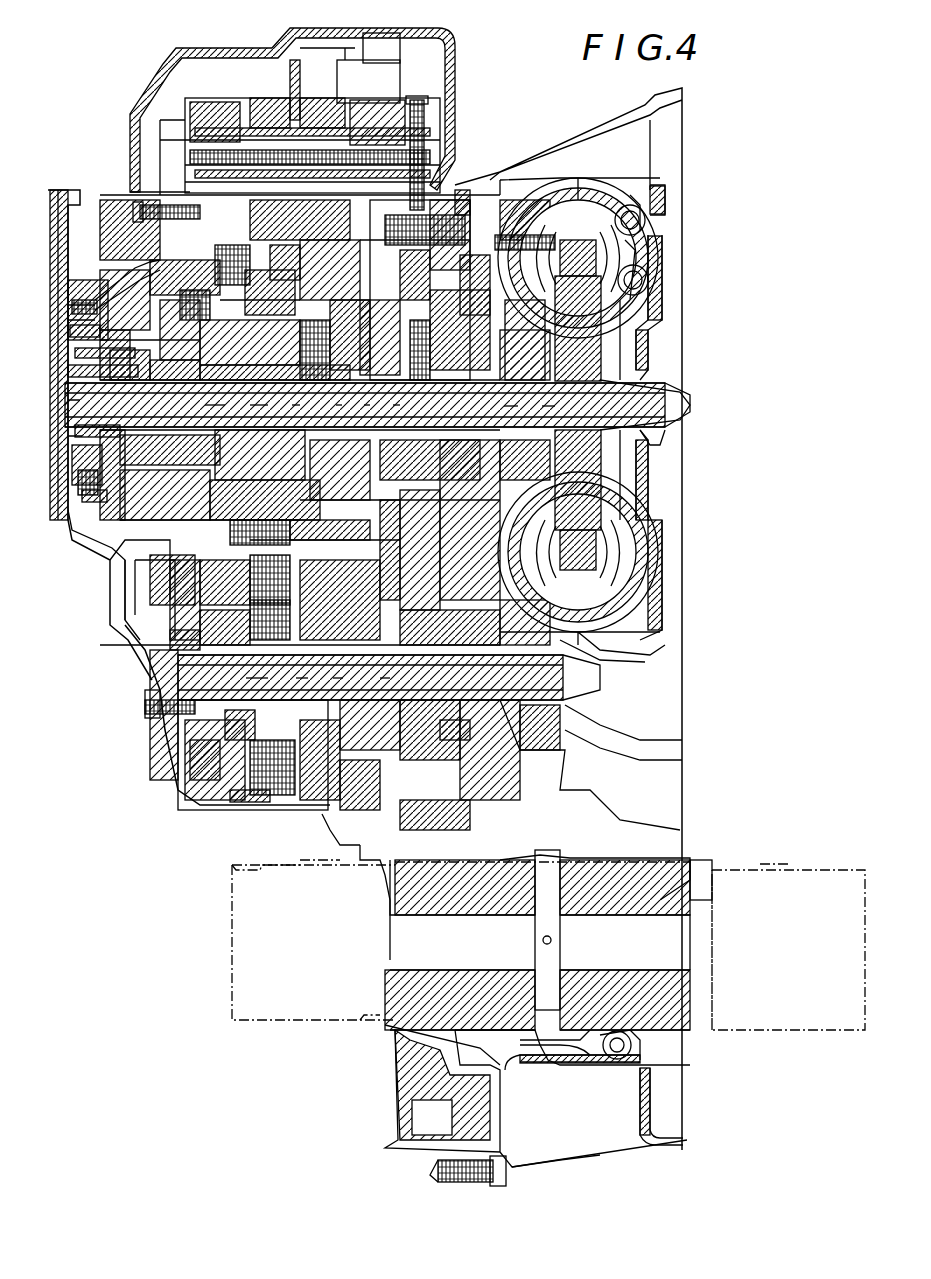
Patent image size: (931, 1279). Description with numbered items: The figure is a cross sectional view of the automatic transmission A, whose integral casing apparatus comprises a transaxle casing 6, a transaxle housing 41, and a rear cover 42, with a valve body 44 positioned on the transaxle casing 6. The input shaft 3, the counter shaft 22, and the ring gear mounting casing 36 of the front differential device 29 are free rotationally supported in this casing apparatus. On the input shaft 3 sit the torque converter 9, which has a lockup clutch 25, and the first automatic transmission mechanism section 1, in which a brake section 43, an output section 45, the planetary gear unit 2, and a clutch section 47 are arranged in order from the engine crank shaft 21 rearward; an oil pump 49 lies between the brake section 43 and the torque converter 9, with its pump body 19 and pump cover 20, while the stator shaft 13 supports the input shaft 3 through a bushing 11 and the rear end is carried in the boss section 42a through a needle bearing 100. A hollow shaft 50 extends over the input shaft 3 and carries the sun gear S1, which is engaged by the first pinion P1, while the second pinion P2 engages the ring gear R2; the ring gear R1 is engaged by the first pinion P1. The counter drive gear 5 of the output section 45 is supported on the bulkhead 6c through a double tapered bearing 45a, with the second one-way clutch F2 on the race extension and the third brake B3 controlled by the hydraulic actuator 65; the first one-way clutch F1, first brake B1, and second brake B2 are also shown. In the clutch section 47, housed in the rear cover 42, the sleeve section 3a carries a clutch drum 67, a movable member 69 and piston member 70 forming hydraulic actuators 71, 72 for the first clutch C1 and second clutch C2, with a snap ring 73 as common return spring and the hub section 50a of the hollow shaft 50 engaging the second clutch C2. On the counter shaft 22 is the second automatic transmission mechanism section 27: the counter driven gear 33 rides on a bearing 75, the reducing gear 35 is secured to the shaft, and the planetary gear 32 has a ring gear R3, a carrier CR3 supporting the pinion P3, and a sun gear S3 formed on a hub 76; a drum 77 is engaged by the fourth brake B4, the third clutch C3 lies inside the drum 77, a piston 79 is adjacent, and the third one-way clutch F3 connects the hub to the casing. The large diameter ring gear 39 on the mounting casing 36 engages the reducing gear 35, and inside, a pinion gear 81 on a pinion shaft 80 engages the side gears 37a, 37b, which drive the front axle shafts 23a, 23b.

The first automatic transmission mechanism section 1 is at (96, 186).
The automatic transmission A is at (110, 82).
The planetary gear unit 2 is at (226, 246).
The input shaft 3 is at (648, 445).
The sleeve section 3a is at (76, 355).
The counter drive gear 5 is at (352, 275).
The transaxle casing 6 is at (460, 215).
The bulkhead 6c is at (356, 403).
The torque converter 9 is at (595, 178).
The bushing 11 is at (660, 318).
The stator shaft 13 is at (377, 405).
The pump body 19 is at (561, 405).
The pump cover 20 is at (499, 405).
The engine crank shaft 21 is at (475, 215).
The counter shaft 22 is at (152, 698).
The left front axle shaft 23a is at (345, 1022).
The right front axle shaft 23b is at (750, 1032).
The lockup clutch 25 is at (655, 228).
The second automatic transmission mechanism section 27 is at (100, 590).
The front differential device 29 is at (600, 858).
The planetary gear 32 is at (320, 850).
The counter driven gear 33 is at (365, 830).
The reducing gear 35 is at (470, 760).
The ring gear mounting casing 36 is at (520, 850).
The left side gear 37a is at (505, 1075).
The right side gear 37b is at (640, 1045).
The large diameter ring gear 39 is at (440, 1160).
The transaxle housing 41 is at (600, 140).
The rear cover 42 is at (128, 630).
The boss section 42a is at (70, 372).
The brake section 43 is at (416, 100).
The valve body 44 is at (223, 47).
The output section 45 is at (297, 100).
The double tapered bearing 45a is at (321, 403).
The clutch section 47 is at (140, 260).
The oil pump 49 is at (498, 186).
The hollow shaft 50 is at (285, 403).
The hub section 50a is at (120, 545).
The hydraulic actuator 65 is at (268, 100).
The clutch drum 67 is at (72, 306).
The movable member 69 is at (78, 480).
The piston member 70 is at (82, 496).
The hydraulic actuator 71 is at (72, 455).
The hydraulic actuator 72 is at (72, 518).
The snap ring 73 is at (70, 330).
The bearing 75 is at (389, 677).
The hub 76 is at (245, 678).
The drum 77 is at (238, 800).
The bolt 79 is at (200, 750).
The pinion shaft 80 is at (545, 1035).
The pinion gear 81 is at (578, 1040).
The needle bearing 100 is at (76, 428).
The first brake B1 is at (525, 307).
The second brake B2 is at (455, 205).
The third brake B3 is at (252, 262).
The fourth brake B4 is at (270, 800).
The first clutch C1 is at (178, 268).
The second clutch C2 is at (68, 292).
The third clutch C3 is at (212, 790).
The carrier CR3 is at (367, 678).
The first one-way clutch F1 is at (385, 403).
The second one-way clutch F2 is at (280, 270).
The third one-way clutch F3 is at (170, 640).
The first pinion P1 is at (248, 403).
The second pinion P2 is at (232, 484).
The pinion P3 is at (326, 678).
The ring gear R1 is at (167, 570).
The ring gear R2 is at (235, 570).
The ring gear R3 is at (295, 800).
The sun gear S1 is at (205, 403).
The sun gear S3 is at (290, 678).